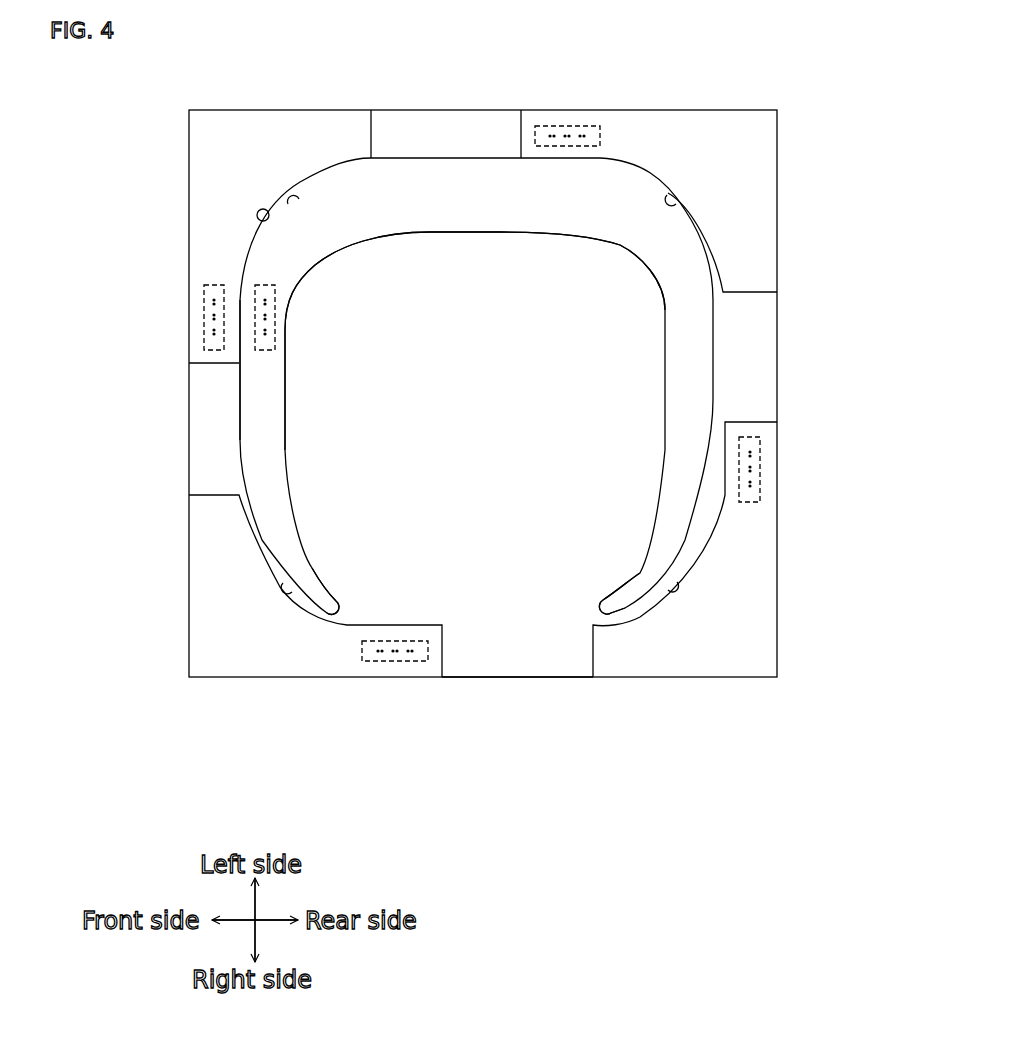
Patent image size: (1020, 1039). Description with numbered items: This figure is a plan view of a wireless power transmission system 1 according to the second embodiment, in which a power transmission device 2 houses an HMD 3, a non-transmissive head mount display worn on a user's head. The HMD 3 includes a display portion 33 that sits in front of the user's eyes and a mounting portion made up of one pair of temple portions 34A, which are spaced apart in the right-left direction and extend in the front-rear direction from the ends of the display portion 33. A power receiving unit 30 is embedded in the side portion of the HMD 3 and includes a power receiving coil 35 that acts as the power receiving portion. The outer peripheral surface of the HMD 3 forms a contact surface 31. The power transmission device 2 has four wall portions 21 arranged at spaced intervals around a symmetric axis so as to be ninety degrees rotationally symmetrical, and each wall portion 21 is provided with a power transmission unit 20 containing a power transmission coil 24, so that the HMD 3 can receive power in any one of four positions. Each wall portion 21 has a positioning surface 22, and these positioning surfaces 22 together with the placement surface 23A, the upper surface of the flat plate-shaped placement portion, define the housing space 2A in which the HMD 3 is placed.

The vehicle seat (seat cushion assembly) 1 is at (501, 718).
The power transmission device 2 is at (779, 158).
The housing space 2A is at (335, 448).
The HMD 3 is at (715, 372).
The power transmission unit 20 is at (567, 126).
The wall portion 21 is at (244, 136).
The positioning surface 22 is at (296, 202).
The placement surface 23A is at (542, 555).
The power transmission coil 24 is at (585, 128).
The power receiving unit 30 is at (286, 345).
The contact surface 31 is at (268, 221).
The display portion 33 is at (473, 235).
The temple portion 34A is at (320, 583).
The power receiving coil 35 is at (278, 325).